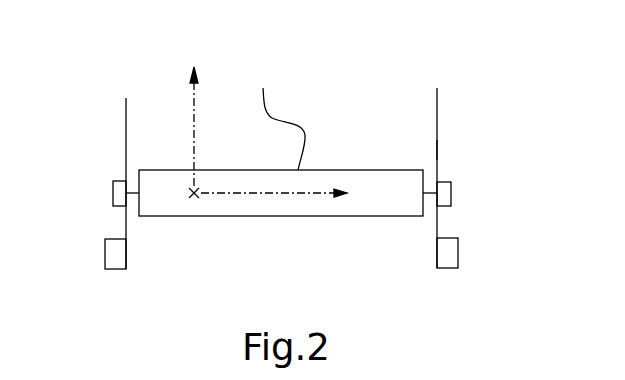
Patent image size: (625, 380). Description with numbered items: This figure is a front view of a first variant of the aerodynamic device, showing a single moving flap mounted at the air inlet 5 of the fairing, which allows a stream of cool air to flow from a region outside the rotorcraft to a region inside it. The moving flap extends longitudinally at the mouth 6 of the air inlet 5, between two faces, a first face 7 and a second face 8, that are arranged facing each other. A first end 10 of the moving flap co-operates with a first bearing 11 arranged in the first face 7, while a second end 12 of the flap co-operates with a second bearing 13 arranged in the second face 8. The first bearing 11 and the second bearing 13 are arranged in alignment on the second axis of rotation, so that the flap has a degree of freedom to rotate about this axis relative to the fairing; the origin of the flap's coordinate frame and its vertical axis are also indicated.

The air inlet 5 is at (398, 47).
The mouth 6 is at (417, 128).
The first face 7 is at (126, 148).
The second face 8 is at (437, 148).
The first end 10 is at (134, 239).
The first bearing 11 is at (113, 193).
The second end 12 is at (419, 238).
The second bearing 13 is at (451, 193).